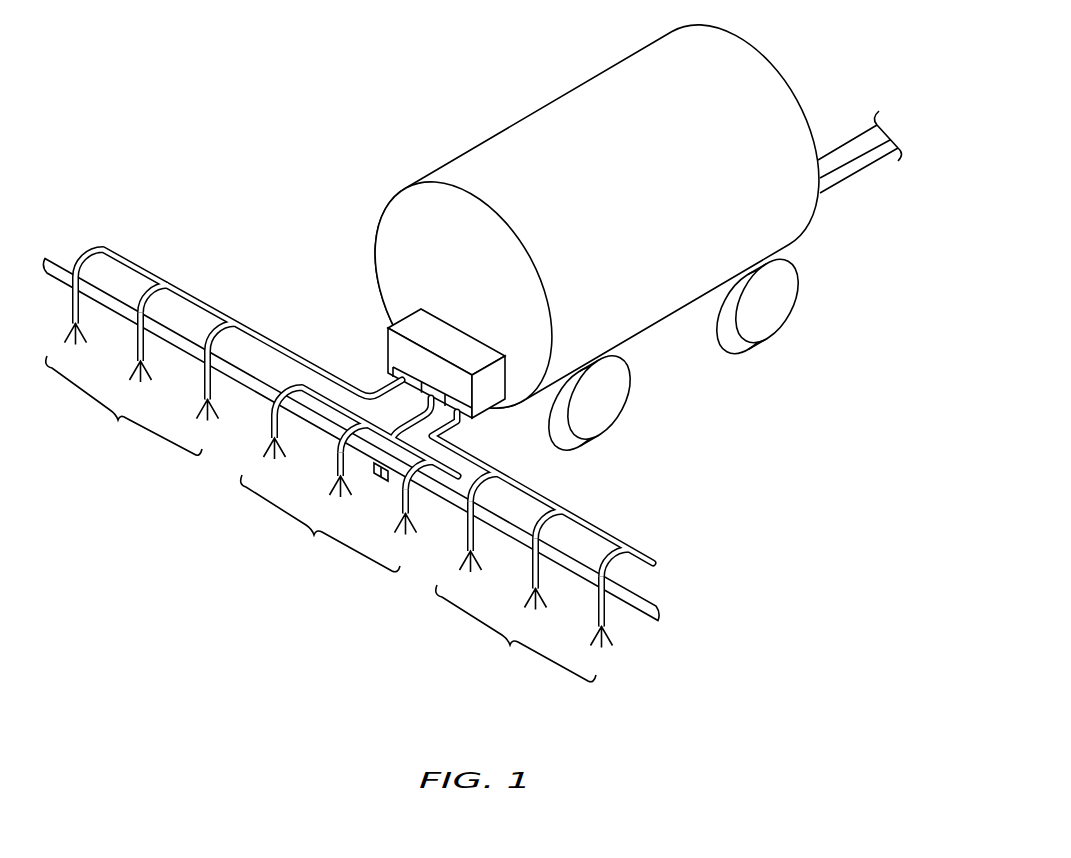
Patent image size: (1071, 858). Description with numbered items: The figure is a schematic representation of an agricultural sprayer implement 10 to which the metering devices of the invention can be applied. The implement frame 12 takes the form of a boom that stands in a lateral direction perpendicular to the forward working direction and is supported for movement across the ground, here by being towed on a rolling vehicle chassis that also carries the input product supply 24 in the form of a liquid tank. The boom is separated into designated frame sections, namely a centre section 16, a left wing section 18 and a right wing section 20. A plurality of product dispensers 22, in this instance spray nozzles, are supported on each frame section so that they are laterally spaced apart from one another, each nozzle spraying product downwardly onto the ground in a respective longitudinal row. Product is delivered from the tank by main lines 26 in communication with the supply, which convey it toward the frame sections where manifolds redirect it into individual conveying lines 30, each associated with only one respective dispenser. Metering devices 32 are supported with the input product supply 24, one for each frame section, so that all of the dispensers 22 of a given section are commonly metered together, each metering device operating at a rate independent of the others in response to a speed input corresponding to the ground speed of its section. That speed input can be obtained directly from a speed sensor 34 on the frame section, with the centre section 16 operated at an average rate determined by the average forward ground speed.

The agricultural implement 10 is at (472, 353).
The implement frame 12 is at (647, 600).
The centre section 16 is at (329, 493).
The left wing section 18 is at (124, 405).
The right wing section 20 is at (516, 633).
The product dispensers 22 is at (466, 550).
The input product supply 24 is at (538, 108).
The main lines 26 is at (292, 350).
The individual conveying lines 30 is at (96, 252).
The metering devices 32 is at (400, 307).
The speed sensor 34 is at (373, 475).